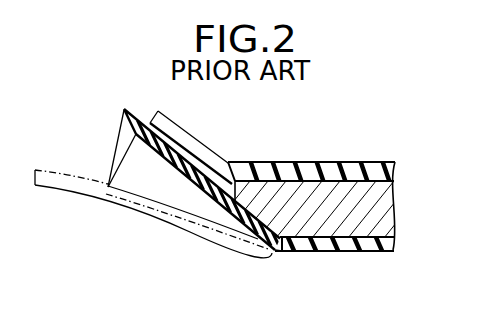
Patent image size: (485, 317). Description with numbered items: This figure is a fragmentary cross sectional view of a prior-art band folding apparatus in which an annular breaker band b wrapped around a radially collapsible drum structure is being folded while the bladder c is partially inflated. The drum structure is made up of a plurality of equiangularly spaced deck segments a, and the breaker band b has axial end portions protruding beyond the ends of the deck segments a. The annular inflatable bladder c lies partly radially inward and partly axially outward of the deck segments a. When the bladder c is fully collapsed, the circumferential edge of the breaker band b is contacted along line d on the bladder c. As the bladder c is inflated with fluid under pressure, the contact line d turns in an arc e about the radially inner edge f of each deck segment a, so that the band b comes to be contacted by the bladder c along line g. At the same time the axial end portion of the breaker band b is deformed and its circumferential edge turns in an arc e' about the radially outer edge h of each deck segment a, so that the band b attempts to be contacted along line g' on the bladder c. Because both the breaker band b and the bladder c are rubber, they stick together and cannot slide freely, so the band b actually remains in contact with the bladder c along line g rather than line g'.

The deck segment a is at (396, 210).
The breaker band b is at (318, 162).
The bladder c is at (353, 252).
The line d is at (96, 193).
The arc e is at (128, 165).
The arc e' is at (96, 146).
The radially inner edge f is at (277, 246).
The line g is at (204, 183).
The line g' is at (108, 142).
The radially outer edge h is at (231, 180).